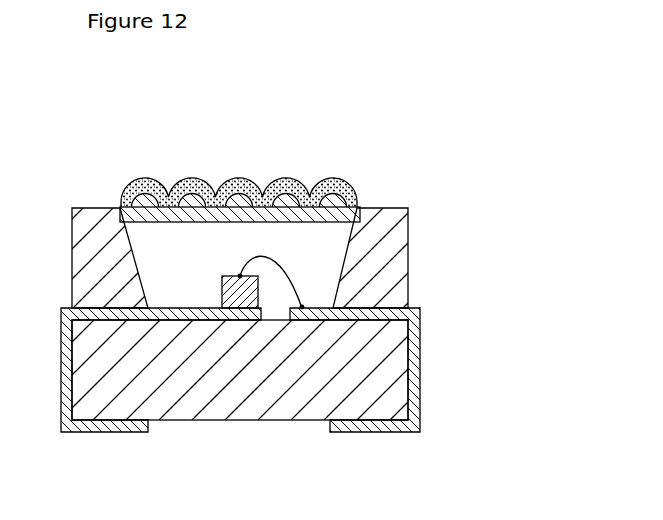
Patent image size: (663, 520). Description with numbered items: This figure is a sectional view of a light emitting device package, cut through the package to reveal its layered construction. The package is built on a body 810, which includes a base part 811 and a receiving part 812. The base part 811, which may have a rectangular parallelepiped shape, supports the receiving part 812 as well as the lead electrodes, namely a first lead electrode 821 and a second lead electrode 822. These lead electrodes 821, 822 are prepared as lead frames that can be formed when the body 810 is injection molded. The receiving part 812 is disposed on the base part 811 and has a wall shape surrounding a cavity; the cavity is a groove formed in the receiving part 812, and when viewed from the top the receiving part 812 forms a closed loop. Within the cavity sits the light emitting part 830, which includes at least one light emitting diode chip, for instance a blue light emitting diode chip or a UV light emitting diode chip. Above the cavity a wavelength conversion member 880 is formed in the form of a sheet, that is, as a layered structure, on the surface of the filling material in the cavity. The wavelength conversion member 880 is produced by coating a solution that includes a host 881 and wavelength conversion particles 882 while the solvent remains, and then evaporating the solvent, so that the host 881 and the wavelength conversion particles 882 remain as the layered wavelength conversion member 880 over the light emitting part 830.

The body 810 is at (265, 314).
The base part 811 is at (383, 247).
The receiving part 812 is at (245, 370).
The first lead electrode 821 is at (108, 426).
The second lead electrode 822 is at (372, 427).
The light emitting part 830 is at (222, 297).
The wavelength conversion member 880 is at (240, 171).
The host 881 is at (310, 188).
The wavelength conversion particles 882 is at (263, 194).